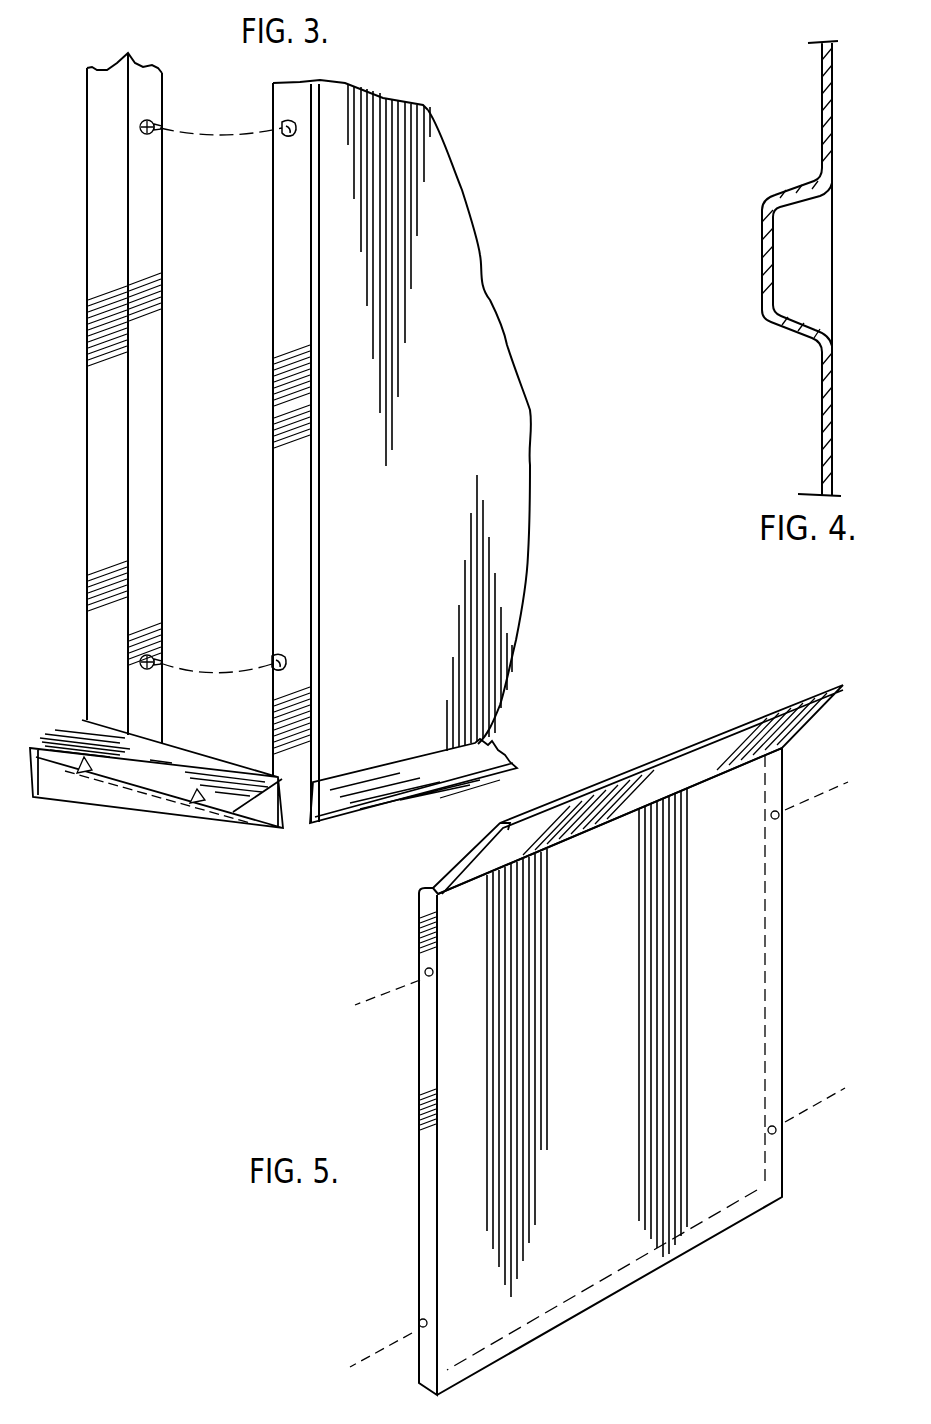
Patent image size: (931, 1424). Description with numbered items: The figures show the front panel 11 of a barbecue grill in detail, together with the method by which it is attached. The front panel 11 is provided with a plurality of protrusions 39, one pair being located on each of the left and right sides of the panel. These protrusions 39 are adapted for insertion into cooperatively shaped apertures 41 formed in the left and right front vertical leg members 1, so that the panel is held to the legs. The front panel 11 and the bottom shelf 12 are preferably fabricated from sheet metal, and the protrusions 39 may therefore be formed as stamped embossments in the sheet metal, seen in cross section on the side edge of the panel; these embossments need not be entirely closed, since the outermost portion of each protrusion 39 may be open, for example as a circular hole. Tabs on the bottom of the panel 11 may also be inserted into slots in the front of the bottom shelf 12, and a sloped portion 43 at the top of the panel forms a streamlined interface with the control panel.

In FIG. 3, the front vertical leg member 1 is at (150, 316).
In FIG. 3, the front panel 11 is at (430, 207).
In FIG. 5, the front panel 11 is at (730, 945).
In FIG. 3, the bottom shelf 12 is at (175, 773).
In FIG. 3, the protrusion 39 is at (285, 134).
In FIG. 4, the protrusion 39 is at (762, 275).
In FIG. 5, the protrusion 39 is at (421, 970).
In FIG. 3, the aperture 41 is at (150, 125).
In FIG. 5, the top flange 43 is at (834, 690).